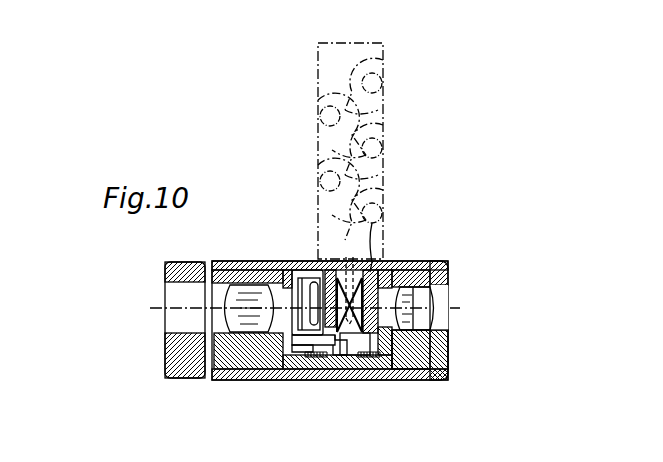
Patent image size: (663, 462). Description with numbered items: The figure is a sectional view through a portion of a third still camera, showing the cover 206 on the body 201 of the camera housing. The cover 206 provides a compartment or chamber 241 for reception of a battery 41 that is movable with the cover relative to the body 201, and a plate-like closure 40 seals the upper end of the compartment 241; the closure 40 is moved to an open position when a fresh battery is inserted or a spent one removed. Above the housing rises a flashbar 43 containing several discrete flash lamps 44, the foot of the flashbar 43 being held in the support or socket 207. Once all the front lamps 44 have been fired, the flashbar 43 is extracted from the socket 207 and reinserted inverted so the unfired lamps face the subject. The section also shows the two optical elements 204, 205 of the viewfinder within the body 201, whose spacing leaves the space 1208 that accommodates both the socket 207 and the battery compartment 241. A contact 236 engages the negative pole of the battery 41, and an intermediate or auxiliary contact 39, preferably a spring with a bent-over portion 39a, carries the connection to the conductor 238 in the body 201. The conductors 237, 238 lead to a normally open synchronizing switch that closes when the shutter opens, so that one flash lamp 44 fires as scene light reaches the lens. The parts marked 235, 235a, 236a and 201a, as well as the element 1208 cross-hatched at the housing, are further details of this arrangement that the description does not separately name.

The flash lamps 44 is at (384, 80).
The flashbar 43 is at (380, 128).
The socket 207 is at (328, 290).
The closure 40 is at (312, 285).
The battery 41 is at (293, 280).
The optical element 205 is at (243, 300).
The pawl tip 236a is at (374, 252).
The pin end 235a is at (384, 262).
The pin 235 is at (385, 285).
The cover 206 is at (440, 266).
The optical element 204 is at (425, 297).
The body 201 is at (430, 347).
The washer 201a is at (176, 352).
The auxiliary contact 39 is at (300, 357).
The battery compartment 241 is at (300, 348).
The bent-over portion 39a is at (314, 352).
The conductor 238 is at (331, 352).
The conductor 237 is at (368, 357).
The contact 236 is at (352, 357).
The space 1208 is at (398, 357).